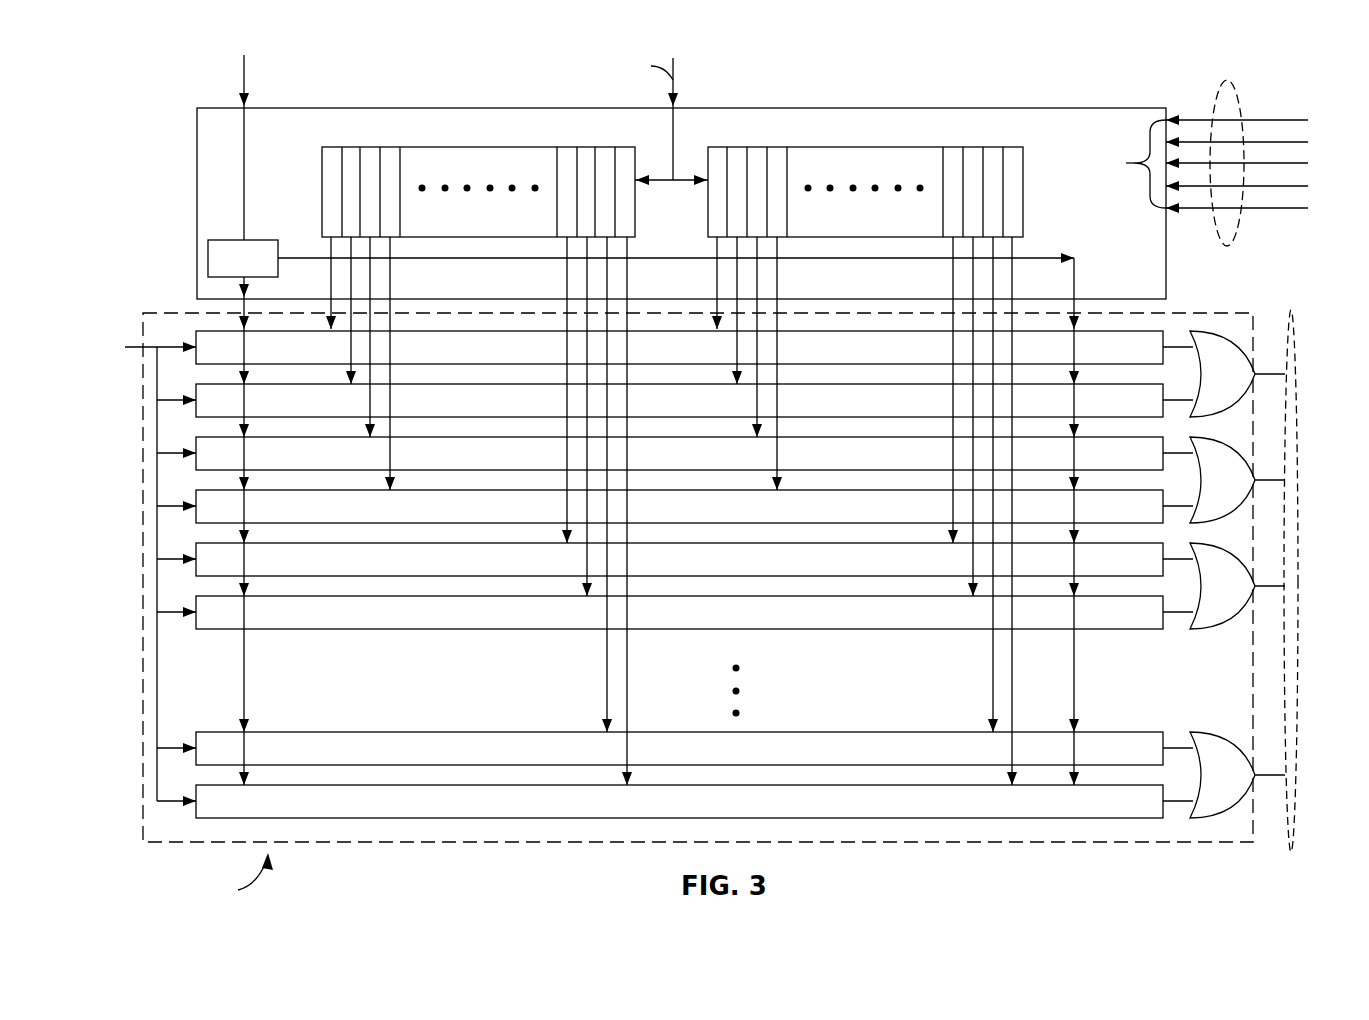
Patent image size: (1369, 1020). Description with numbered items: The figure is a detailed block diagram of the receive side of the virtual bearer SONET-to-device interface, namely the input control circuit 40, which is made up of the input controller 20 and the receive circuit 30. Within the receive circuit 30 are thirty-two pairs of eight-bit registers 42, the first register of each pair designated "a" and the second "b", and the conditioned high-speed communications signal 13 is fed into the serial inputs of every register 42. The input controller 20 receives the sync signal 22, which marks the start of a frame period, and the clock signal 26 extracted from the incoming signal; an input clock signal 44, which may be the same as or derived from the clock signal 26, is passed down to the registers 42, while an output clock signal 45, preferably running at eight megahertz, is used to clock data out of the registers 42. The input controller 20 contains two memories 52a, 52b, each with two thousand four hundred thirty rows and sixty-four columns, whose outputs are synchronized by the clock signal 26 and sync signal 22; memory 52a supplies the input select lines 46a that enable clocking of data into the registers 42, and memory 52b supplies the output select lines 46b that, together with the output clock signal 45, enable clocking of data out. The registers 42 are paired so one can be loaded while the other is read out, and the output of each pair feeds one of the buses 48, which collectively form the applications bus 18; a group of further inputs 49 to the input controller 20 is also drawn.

The conditioned high-speed communications signal 13 is at (136, 348).
The applications bus 18 is at (1296, 687).
The input controller 20 is at (681, 203).
The sync signal 22 is at (674, 80).
The clock signal 26 is at (243, 80).
The receive circuit 30 is at (358, 844).
The input control circuit 40 is at (240, 877).
The registers 42 is at (679, 574).
The input clock signal 44 is at (240, 306).
The output clock signal 45 is at (1077, 312).
The input select lines 46a is at (605, 688).
The output select lines 46b is at (991, 694).
The buses 48 is at (1270, 775).
The input signals 49 is at (1232, 107).
The memory 52a is at (478, 371).
The memory 52b is at (865, 371).